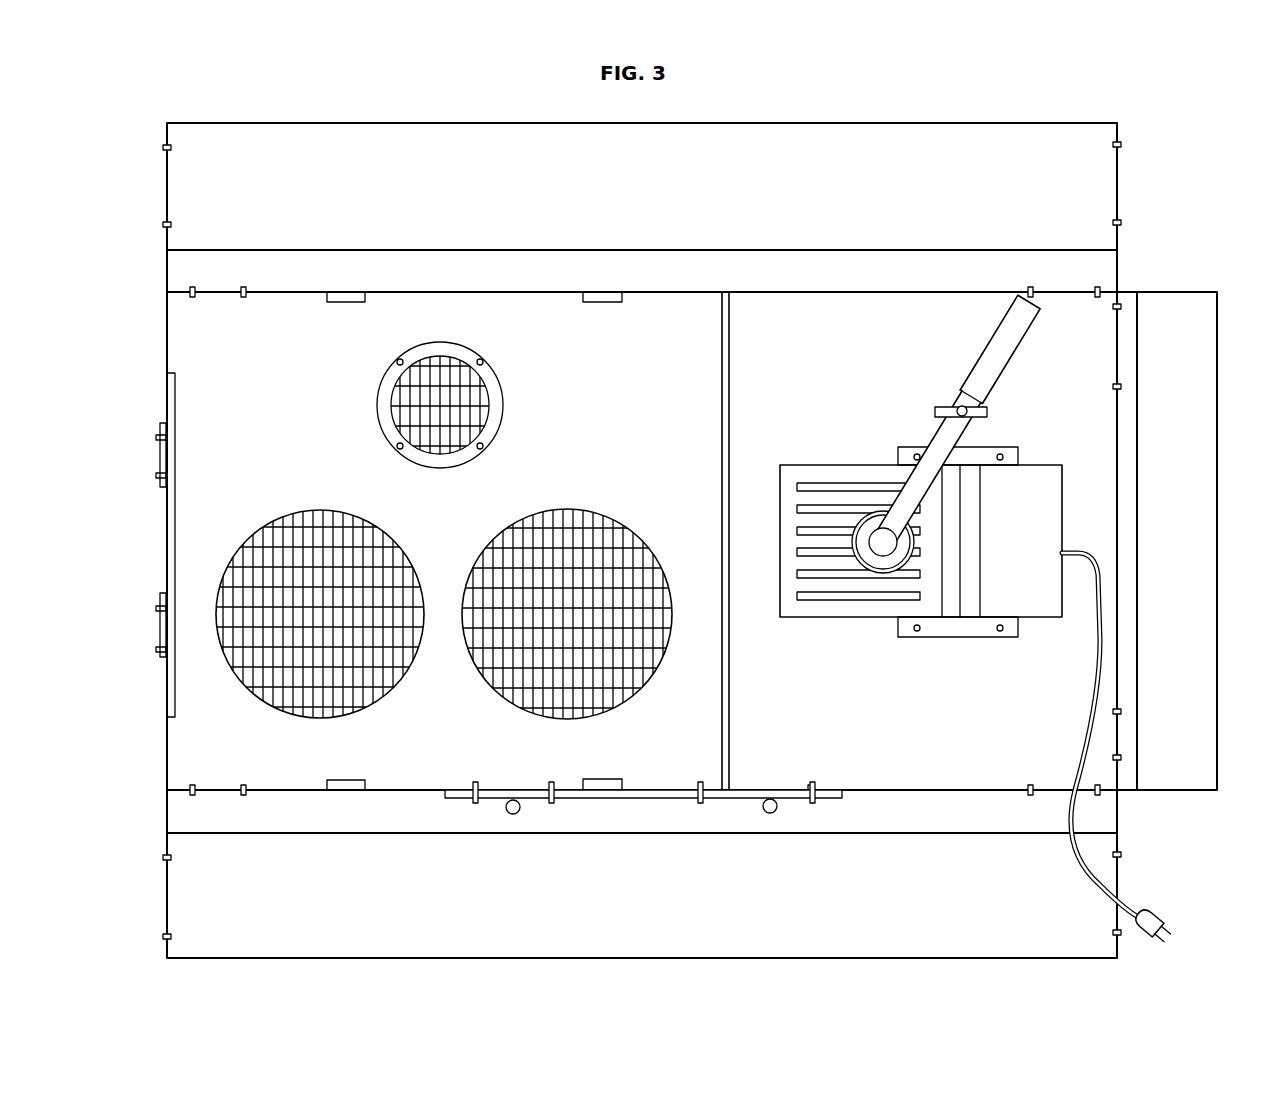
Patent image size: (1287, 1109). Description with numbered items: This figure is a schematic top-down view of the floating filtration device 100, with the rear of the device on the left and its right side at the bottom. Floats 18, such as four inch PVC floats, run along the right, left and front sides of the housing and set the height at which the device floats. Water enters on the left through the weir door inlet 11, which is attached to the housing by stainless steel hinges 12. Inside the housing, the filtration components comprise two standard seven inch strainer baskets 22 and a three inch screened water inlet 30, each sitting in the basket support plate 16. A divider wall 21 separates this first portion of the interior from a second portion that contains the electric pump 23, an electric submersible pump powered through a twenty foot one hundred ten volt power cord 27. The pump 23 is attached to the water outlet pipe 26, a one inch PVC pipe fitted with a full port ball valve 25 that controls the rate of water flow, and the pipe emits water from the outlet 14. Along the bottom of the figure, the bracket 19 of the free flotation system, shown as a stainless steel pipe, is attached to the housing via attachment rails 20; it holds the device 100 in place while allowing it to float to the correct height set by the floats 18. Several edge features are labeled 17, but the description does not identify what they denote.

The device 100 is at (1170, 205).
The weir door inlet 11 is at (170, 392).
The hinges 12 is at (148, 460).
The outlet 14 is at (1035, 298).
The basket support plate 16 is at (260, 452).
The frame edge 17 is at (167, 272).
The floats 18 is at (480, 202).
The bracket 19 is at (500, 808).
The attachment rails 20 is at (650, 798).
The divider wall 21 is at (740, 372).
The strainer baskets 22 is at (435, 560).
The electric pump 23 is at (933, 652).
The full port ball valve 25 is at (937, 405).
The water outlet pipe 26 is at (1045, 343).
The power cord 27 is at (1178, 893).
The screened water inlet 30 is at (518, 372).